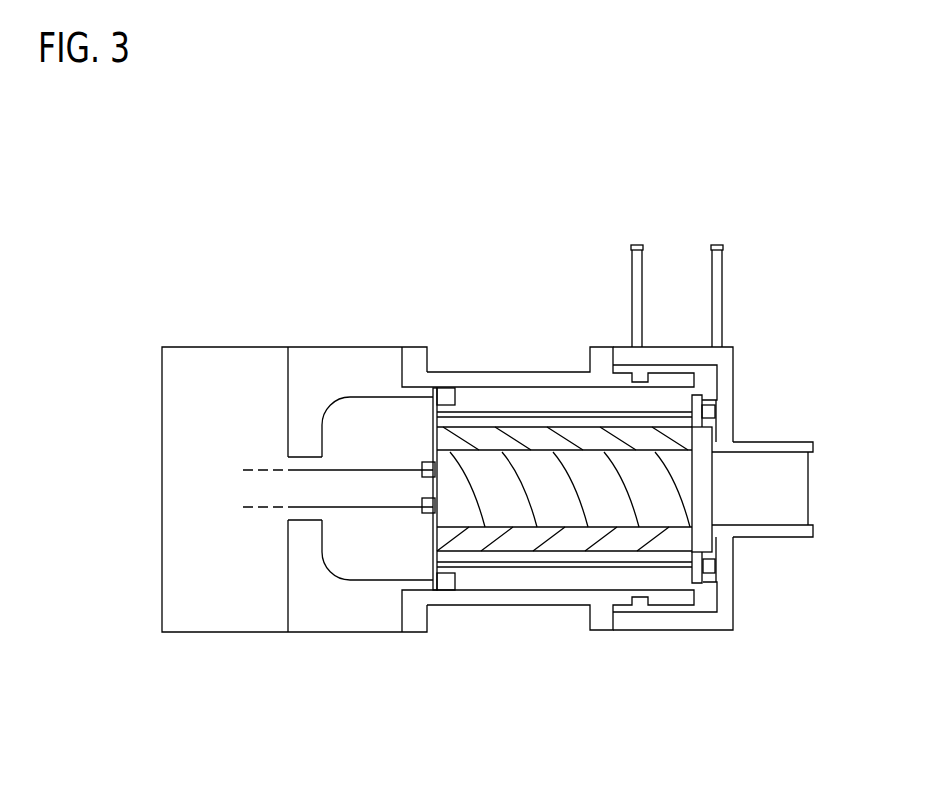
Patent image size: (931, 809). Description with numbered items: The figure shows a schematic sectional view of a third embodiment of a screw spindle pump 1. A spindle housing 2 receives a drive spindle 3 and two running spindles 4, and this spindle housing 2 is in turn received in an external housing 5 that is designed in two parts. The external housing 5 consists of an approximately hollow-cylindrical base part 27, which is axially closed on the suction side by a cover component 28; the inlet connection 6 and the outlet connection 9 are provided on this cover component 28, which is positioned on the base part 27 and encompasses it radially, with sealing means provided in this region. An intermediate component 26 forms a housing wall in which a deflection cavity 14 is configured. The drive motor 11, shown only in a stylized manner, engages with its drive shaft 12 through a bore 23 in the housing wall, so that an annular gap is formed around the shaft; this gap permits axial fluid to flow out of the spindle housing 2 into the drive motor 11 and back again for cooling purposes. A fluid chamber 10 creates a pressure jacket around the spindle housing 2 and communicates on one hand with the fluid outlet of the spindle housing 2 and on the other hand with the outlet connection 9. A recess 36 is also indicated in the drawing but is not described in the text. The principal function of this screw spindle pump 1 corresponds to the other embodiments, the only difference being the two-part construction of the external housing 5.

The screw spindle pump 1 is at (746, 221).
The spindle housing 2 is at (557, 418).
The drive spindle 3 is at (550, 498).
The running spindles 4 is at (516, 428).
The external housing 5 is at (427, 462).
The inlet connection 6 is at (794, 441).
The outlet connection 9 is at (720, 283).
The fluid chamber 10 is at (673, 577).
The drive motor 11 is at (204, 639).
The drive shaft 12 is at (380, 492).
The deflection cavity 14 is at (348, 425).
The bore 23 is at (303, 523).
The intermediate component 26 is at (310, 615).
The base part 27 is at (486, 371).
The cover component 28 is at (728, 377).
The recess 36 is at (317, 437).